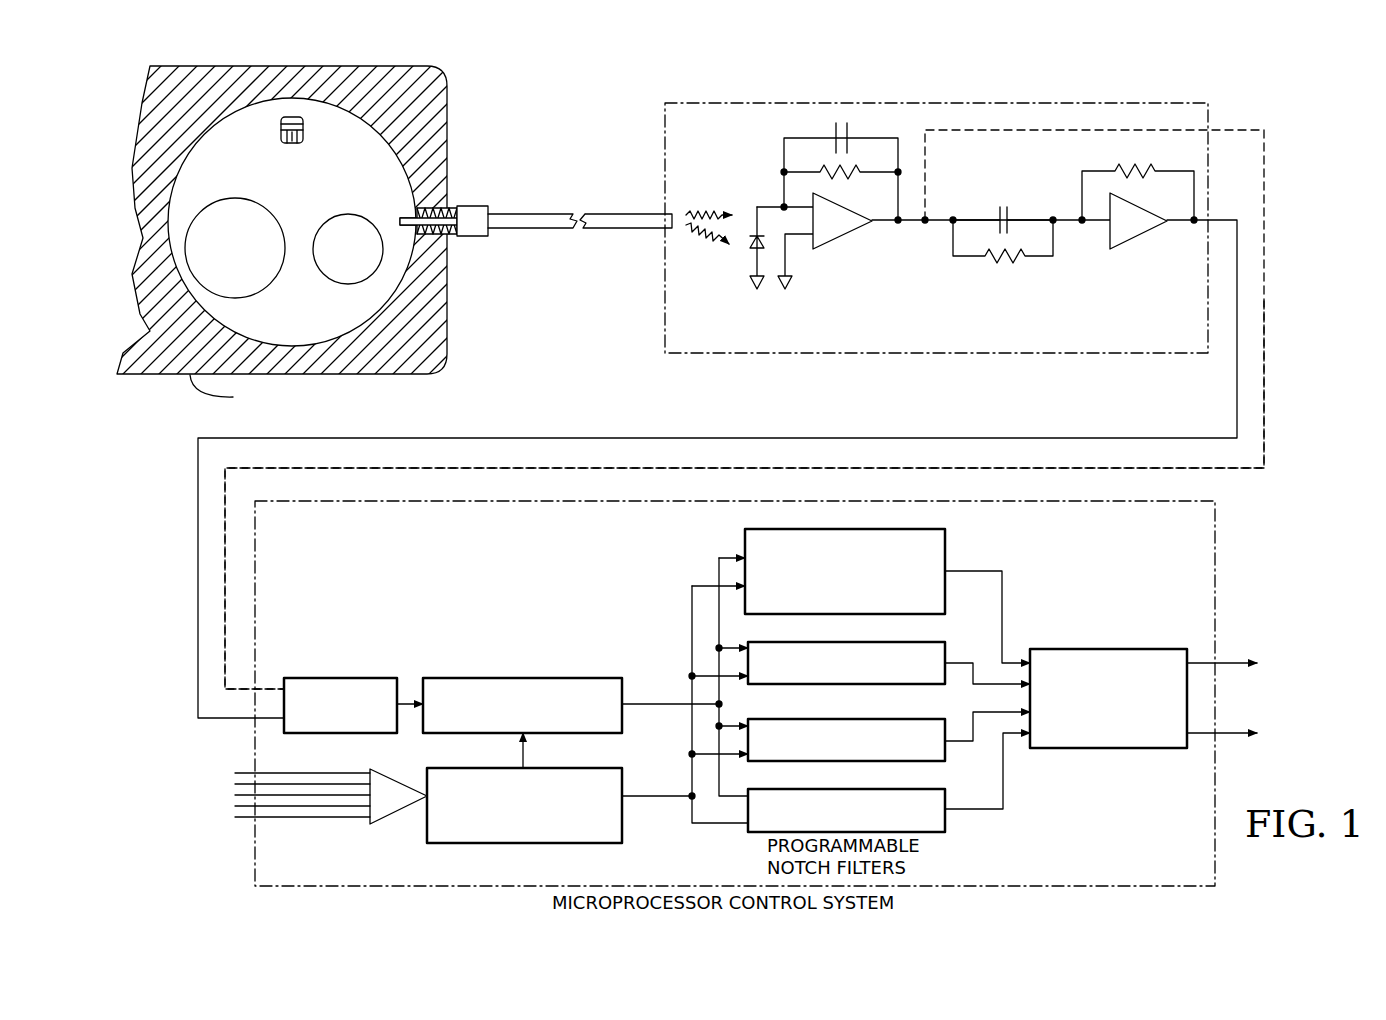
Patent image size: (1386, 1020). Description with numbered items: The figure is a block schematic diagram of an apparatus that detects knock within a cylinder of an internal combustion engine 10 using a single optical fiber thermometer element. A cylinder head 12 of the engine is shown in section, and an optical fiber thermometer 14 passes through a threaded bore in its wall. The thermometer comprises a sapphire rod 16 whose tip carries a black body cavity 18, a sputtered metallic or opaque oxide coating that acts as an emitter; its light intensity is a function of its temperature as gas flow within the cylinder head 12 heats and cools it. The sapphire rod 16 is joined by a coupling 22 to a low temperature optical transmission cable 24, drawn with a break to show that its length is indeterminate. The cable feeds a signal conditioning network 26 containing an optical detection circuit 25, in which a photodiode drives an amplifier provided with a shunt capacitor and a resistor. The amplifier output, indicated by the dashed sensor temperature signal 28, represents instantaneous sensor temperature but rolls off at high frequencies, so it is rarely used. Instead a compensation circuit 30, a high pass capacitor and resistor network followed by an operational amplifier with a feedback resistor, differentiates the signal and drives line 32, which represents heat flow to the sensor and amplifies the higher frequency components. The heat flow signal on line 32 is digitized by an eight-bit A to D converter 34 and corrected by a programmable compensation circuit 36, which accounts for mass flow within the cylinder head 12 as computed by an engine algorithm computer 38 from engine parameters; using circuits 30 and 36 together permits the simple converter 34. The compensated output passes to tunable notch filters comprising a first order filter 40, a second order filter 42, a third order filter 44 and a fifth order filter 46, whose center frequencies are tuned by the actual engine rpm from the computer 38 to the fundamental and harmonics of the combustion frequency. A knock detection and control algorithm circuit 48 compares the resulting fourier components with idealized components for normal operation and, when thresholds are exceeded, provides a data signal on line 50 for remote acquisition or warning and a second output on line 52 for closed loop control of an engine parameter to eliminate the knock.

The internal combustion engine 10 is at (384, 228).
The cylinder head 12 is at (331, 209).
The optical fiber thermometer 14 is at (404, 228).
The sapphire rod 16 is at (456, 205).
The black body cavity 18 is at (402, 197).
The coupling 22 is at (482, 237).
The low temperature optical transmission cable 24 is at (528, 212).
The optical detection circuit 25 is at (898, 222).
The signal conditioning network 26 is at (936, 225).
The sensor temperature signal 28 is at (1270, 423).
The compensation circuit 30 is at (744, 409).
The heat flow line 32 is at (1241, 238).
The eight-bit A to D converter 34 is at (330, 676).
The programmable compensation circuit 36 is at (527, 676).
The engine algorithm computer 38 is at (623, 803).
The first order filter 40 is at (945, 555).
The second order filter 42 is at (945, 650).
The third order filter 44 is at (945, 748).
The fifth order filter 46 is at (945, 820).
The knock detection and control algorithm circuit 48 is at (1107, 648).
The data signal line 50 is at (1251, 745).
The second output line 52 is at (1271, 653).